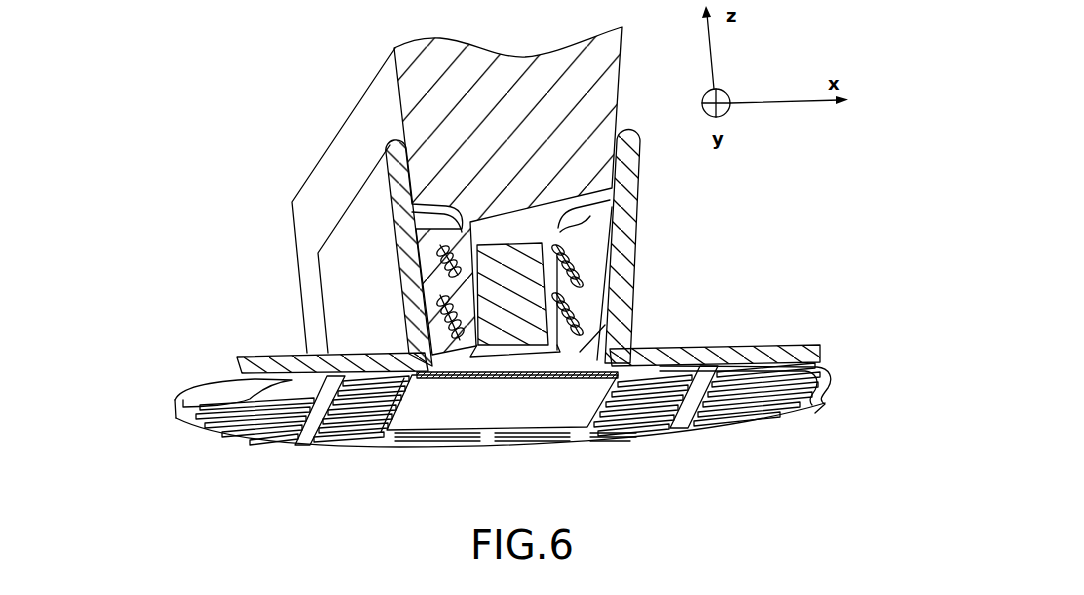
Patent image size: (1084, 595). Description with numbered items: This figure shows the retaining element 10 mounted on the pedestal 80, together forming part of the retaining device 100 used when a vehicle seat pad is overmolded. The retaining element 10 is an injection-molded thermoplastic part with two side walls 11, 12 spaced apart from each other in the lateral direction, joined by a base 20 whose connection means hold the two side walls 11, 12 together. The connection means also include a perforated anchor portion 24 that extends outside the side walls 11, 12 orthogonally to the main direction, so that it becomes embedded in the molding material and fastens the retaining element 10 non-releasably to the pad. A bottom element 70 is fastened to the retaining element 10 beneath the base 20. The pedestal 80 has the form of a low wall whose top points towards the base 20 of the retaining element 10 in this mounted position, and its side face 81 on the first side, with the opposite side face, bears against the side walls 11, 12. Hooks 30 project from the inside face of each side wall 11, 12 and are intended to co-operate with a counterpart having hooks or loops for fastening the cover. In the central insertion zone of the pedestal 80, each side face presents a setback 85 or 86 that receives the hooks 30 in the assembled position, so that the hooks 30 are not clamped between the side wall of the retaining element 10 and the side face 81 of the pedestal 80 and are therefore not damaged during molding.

The retaining device 100 is at (270, 80).
The pedestal 80 is at (606, 76).
The side face 81 is at (338, 167).
The side wall 11 is at (345, 298).
The side wall 12 is at (624, 242).
The hook 30 is at (431, 340).
The setback 85 is at (452, 216).
The setback 86 is at (565, 217).
The base 20 is at (633, 348).
The bottom element 70 is at (446, 413).
The retaining element 10 is at (168, 455).
The anchor portion 24 is at (816, 396).